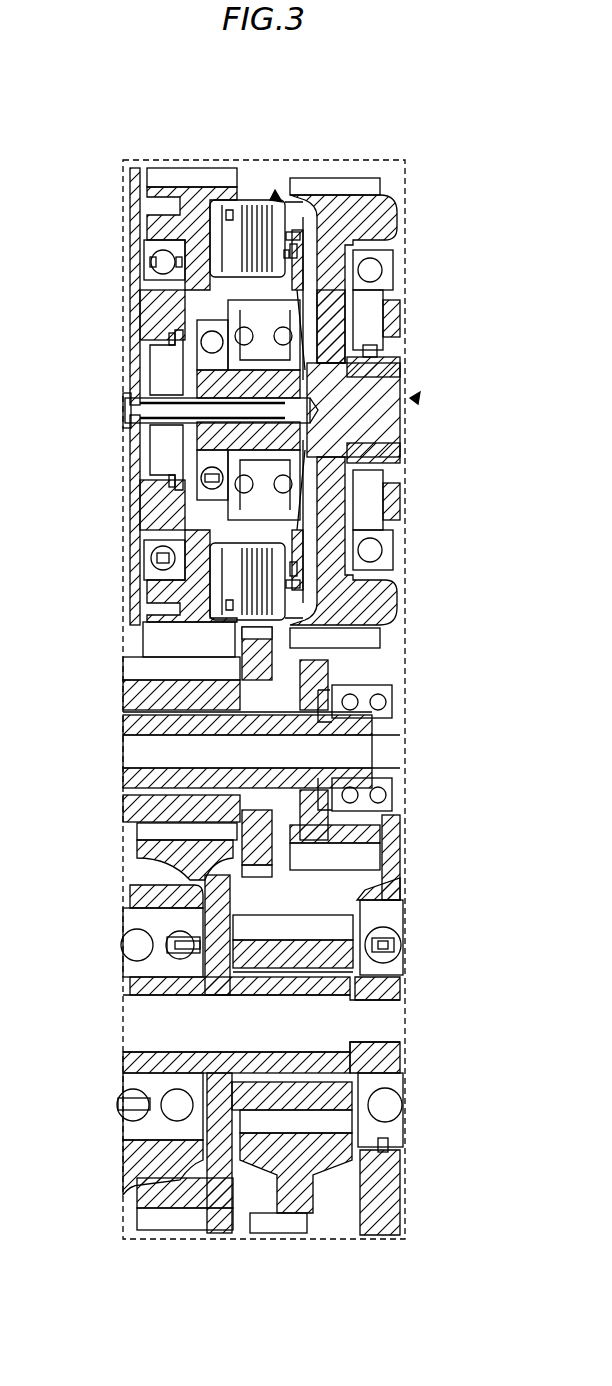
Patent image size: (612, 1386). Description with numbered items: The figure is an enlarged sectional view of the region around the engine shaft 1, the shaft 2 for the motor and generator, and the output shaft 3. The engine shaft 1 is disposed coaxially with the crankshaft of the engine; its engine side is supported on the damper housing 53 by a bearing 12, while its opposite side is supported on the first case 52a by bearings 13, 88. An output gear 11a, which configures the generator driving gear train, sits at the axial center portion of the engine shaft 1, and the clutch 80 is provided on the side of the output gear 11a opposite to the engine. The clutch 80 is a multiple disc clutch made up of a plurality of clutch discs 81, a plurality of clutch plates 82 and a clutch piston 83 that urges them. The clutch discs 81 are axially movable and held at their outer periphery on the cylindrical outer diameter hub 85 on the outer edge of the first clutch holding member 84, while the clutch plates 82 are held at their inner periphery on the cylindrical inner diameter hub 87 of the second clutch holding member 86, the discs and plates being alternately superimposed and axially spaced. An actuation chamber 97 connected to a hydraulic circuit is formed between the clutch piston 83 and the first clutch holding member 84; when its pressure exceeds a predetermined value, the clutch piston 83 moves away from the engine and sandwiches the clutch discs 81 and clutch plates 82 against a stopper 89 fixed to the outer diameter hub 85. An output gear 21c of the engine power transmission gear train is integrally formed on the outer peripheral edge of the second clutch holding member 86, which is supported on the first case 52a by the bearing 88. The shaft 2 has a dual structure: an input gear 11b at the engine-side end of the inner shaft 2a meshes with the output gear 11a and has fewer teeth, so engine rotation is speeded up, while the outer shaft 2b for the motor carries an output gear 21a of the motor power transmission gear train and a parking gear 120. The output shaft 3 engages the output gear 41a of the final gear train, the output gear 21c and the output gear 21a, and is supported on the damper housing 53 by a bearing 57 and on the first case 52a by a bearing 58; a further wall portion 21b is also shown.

The engine shaft 1 is at (415, 398).
The shaft 2 is at (350, 748).
The inner shaft 2a is at (135, 725).
The outer shaft for the motor 2b is at (135, 695).
The output shaft 3 is at (345, 1020).
The output gear 11a is at (372, 185).
The input gear 11b is at (370, 860).
The bearing 12 is at (383, 268).
The bearing 13 is at (205, 495).
The output gear 21a is at (140, 662).
The partition wall 21b is at (145, 1218).
The output gear 21c is at (176, 170).
The output gear 41a is at (340, 930).
The first case 52a is at (140, 352).
The damper housing 53 is at (397, 168).
The bearing 57 is at (395, 960).
The bearing 58 is at (137, 940).
The clutch 80 is at (280, 192).
The clutch discs 81 is at (268, 203).
The clutch plates 82 is at (235, 290).
The clutch piston 83 is at (300, 245).
The first clutch holding member 84 is at (320, 318).
The outer diameter hub 85 is at (221, 205).
The second clutch holding member 86 is at (193, 243).
The inner diameter hub 87 is at (215, 305).
The bearing 88 is at (160, 262).
The stopper 89 is at (250, 210).
The actuation chamber 97 is at (372, 352).
The parking gear 120 is at (392, 690).